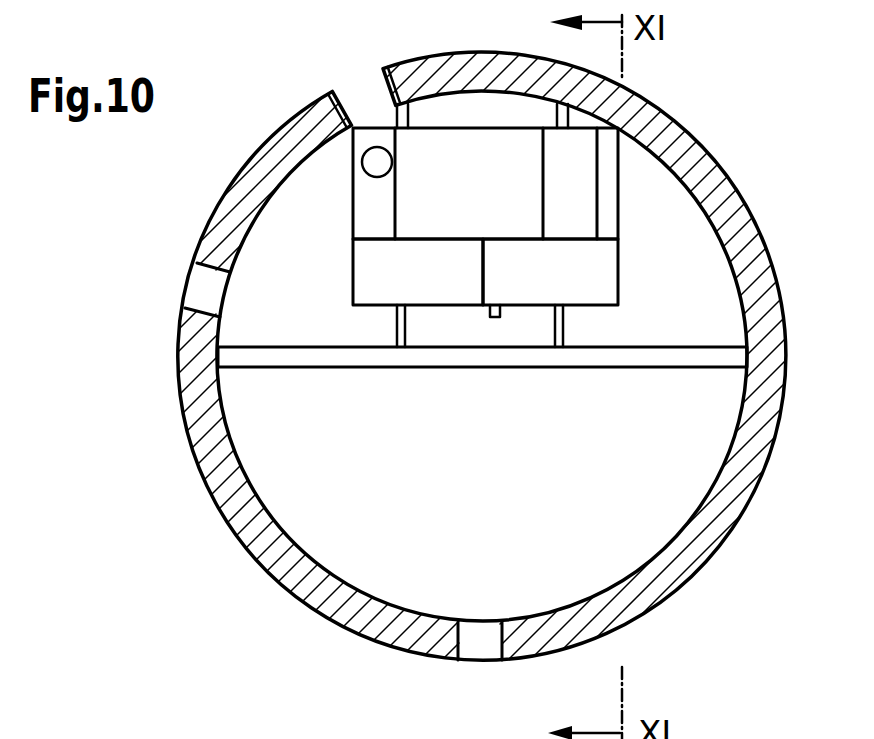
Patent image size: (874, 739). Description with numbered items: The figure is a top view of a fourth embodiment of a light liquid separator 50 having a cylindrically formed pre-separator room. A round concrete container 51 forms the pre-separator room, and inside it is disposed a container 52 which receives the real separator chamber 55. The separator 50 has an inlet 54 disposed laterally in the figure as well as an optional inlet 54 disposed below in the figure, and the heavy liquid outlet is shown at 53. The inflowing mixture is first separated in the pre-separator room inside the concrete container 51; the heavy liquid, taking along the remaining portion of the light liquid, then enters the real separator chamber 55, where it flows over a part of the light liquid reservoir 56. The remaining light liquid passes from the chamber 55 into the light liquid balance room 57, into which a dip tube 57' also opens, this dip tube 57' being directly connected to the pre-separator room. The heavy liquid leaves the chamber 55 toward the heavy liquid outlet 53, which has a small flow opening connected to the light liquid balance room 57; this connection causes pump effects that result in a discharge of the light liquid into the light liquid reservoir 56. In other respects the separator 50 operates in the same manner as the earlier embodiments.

The separator 50 is at (682, 115).
The round concrete container 51 is at (734, 218).
The container 52 is at (607, 262).
The heavy liquid outlet 53 is at (355, 88).
The inlet 54 is at (204, 287).
The separator chamber 55 is at (505, 198).
The light liquid reservoir 56 is at (575, 205).
The light liquid balance room 57 is at (381, 253).
The dip tube 57' is at (342, 181).